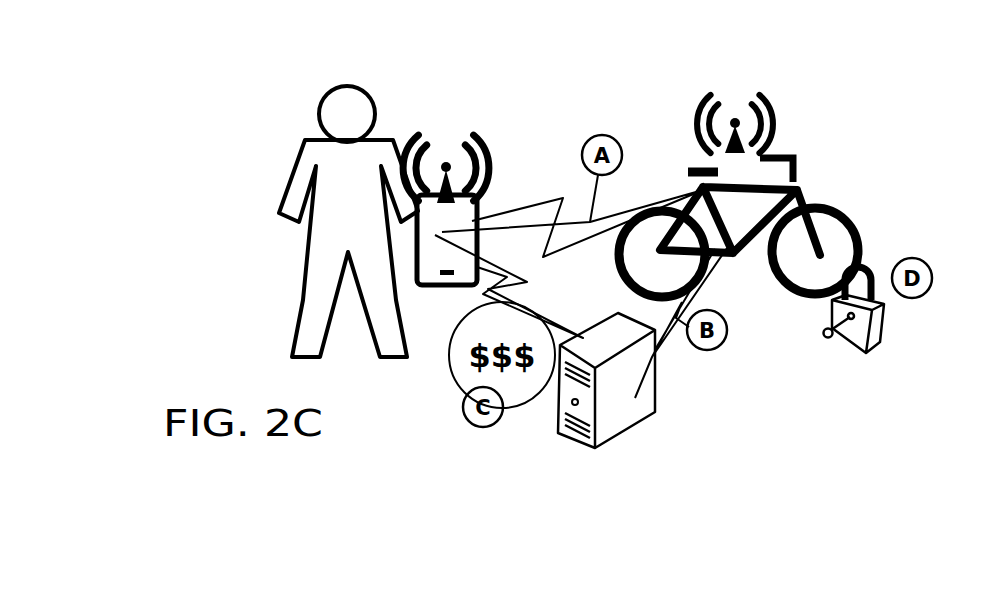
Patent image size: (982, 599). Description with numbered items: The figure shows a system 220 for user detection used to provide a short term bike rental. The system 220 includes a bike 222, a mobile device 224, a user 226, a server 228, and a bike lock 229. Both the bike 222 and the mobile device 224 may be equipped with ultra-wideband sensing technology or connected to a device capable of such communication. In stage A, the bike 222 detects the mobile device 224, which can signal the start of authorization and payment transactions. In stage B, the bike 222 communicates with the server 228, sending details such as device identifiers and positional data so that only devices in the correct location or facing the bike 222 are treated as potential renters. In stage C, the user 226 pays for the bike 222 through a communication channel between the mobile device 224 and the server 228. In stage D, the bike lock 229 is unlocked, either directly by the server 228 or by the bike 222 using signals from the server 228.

The system 220 is at (824, 418).
The bike 222 is at (833, 200).
The mobile device 224 is at (430, 289).
The user 226 is at (328, 93).
The server 228 is at (612, 313).
The bike lock 229 is at (890, 325).